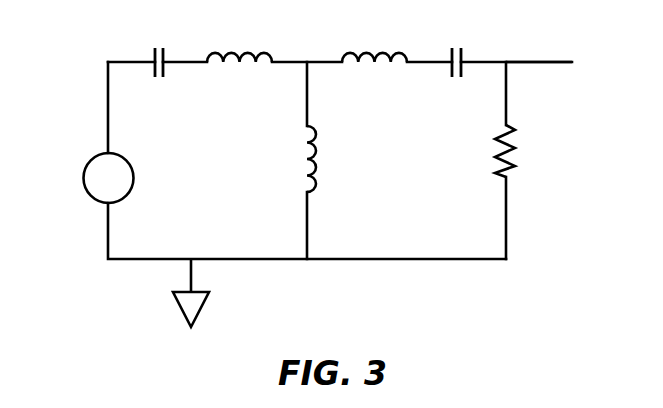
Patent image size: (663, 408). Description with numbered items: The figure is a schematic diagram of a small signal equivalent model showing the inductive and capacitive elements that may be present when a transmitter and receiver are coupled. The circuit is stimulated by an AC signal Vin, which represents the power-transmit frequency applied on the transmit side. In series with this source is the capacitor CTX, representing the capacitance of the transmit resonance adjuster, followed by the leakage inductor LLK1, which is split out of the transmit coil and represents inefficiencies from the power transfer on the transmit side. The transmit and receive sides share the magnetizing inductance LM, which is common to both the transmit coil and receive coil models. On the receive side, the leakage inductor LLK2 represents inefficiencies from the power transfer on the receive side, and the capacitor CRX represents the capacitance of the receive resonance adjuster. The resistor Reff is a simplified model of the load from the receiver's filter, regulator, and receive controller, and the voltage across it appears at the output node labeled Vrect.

The AC signal Vin is at (91, 166).
The capacitor CTX is at (159, 48).
The leakage inductor LLK1 is at (239, 40).
The leakage inductor LLK2 is at (374, 40).
The capacitor CRX is at (456, 48).
The magnetizing inductance LM is at (334, 159).
The resistor Reff is at (536, 151).
The rectified output voltage Vrect is at (561, 46).